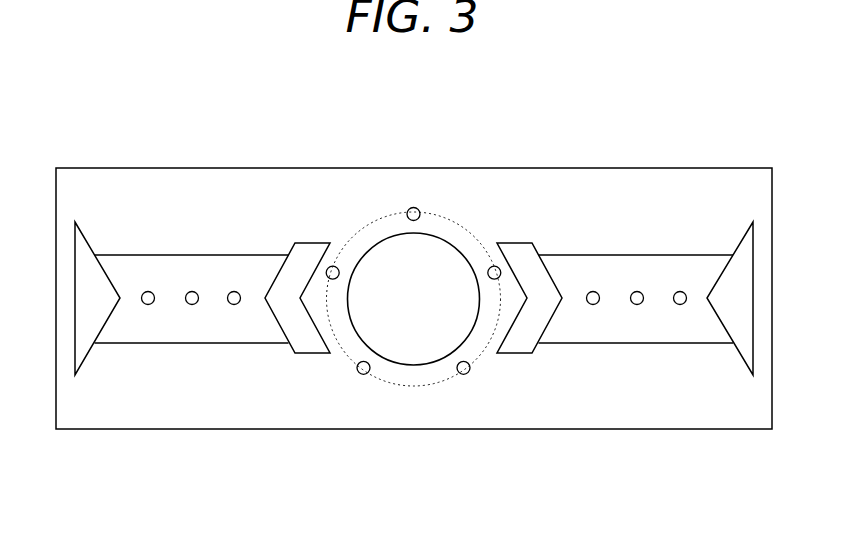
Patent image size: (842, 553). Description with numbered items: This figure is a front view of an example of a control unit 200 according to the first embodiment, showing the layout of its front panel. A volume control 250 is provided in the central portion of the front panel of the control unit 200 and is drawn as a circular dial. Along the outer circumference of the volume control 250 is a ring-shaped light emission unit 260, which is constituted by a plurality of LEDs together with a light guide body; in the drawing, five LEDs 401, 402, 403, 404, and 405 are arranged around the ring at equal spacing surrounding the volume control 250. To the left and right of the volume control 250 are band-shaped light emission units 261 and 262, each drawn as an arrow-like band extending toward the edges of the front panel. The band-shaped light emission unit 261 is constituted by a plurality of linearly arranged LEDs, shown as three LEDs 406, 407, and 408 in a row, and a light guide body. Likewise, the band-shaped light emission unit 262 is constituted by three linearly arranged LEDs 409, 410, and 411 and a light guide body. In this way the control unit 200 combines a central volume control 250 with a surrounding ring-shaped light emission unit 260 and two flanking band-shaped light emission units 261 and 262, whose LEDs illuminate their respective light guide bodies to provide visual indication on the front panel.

The control unit 200 is at (223, 168).
The volume control 250 is at (372, 247).
The ring-shaped light emission unit 260 is at (452, 220).
The band-shaped light emission unit 261 is at (700, 255).
The band-shaped light emission unit 262 is at (123, 255).
The LED 401 is at (413, 207).
The LED 402 is at (495, 266).
The LED 403 is at (463, 375).
The LED 404 is at (363, 375).
The LED 405 is at (333, 266).
The LED 406 is at (593, 305).
The LED 407 is at (637, 305).
The LED 408 is at (680, 305).
The LED 409 is at (234, 305).
The LED 410 is at (192, 305).
The LED 411 is at (147, 305).